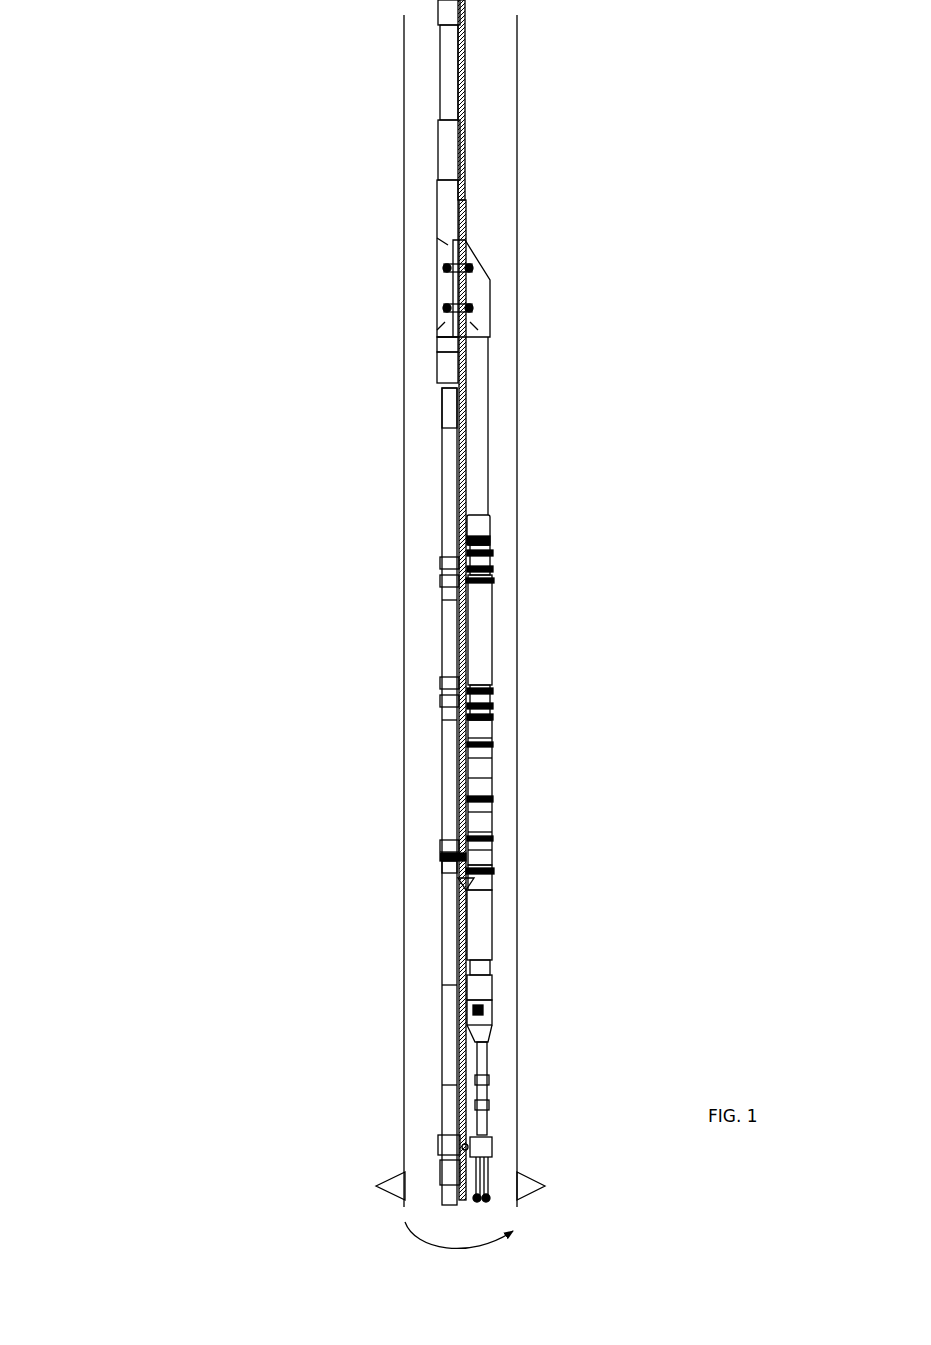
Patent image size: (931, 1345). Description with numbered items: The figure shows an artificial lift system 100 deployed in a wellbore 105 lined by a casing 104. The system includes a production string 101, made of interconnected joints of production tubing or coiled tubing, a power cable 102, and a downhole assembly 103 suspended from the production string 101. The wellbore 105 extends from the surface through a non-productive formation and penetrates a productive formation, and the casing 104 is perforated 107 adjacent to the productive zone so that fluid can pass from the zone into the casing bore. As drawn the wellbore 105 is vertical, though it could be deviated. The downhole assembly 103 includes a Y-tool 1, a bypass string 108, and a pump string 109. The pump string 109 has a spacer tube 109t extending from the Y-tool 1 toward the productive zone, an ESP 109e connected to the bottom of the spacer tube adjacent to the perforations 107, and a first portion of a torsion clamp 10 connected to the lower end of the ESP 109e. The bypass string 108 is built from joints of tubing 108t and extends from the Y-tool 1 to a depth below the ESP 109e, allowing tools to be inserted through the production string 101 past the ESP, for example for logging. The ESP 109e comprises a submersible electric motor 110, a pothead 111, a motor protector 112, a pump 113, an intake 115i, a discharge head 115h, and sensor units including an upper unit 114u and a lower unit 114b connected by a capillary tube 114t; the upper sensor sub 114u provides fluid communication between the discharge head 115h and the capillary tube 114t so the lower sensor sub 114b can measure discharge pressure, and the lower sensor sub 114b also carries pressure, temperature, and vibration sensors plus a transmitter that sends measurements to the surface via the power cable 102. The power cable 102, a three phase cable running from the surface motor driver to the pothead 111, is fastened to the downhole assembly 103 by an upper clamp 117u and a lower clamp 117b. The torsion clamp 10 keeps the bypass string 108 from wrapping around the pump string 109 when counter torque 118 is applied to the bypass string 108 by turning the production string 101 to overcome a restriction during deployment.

The artificial lift system 100 is at (92, 48).
The production string 101 is at (440, 62).
The power cable 102 is at (517, 66).
The downhole assembly 103 is at (273, 232).
The casing 104 is at (404, 540).
The wellbore 105 is at (508, 157).
The perforations 107 is at (394, 1178).
The bypass string 108 is at (305, 414).
The joints of tubing 108t is at (440, 413).
The pump string 109 is at (647, 385).
The spacer tube 109t is at (488, 398).
The ESP 109e is at (612, 777).
The submersible electric motor 110 is at (492, 920).
The pothead 111 is at (490, 875).
The motor protector 112 is at (493, 765).
The pump 113 is at (493, 614).
The upper sensor unit 114u is at (490, 526).
The lower sensor unit 114b is at (485, 1078).
The capillary tube 114t is at (483, 1030).
The discharge head 115h is at (490, 562).
The intake 115i is at (490, 702).
The upper clamp 117u is at (447, 268).
The lower clamp 117b is at (445, 862).
The counter torque 118 is at (406, 1237).
The Y-tool 1 is at (492, 284).
The torsion clamp 10 is at (492, 1162).